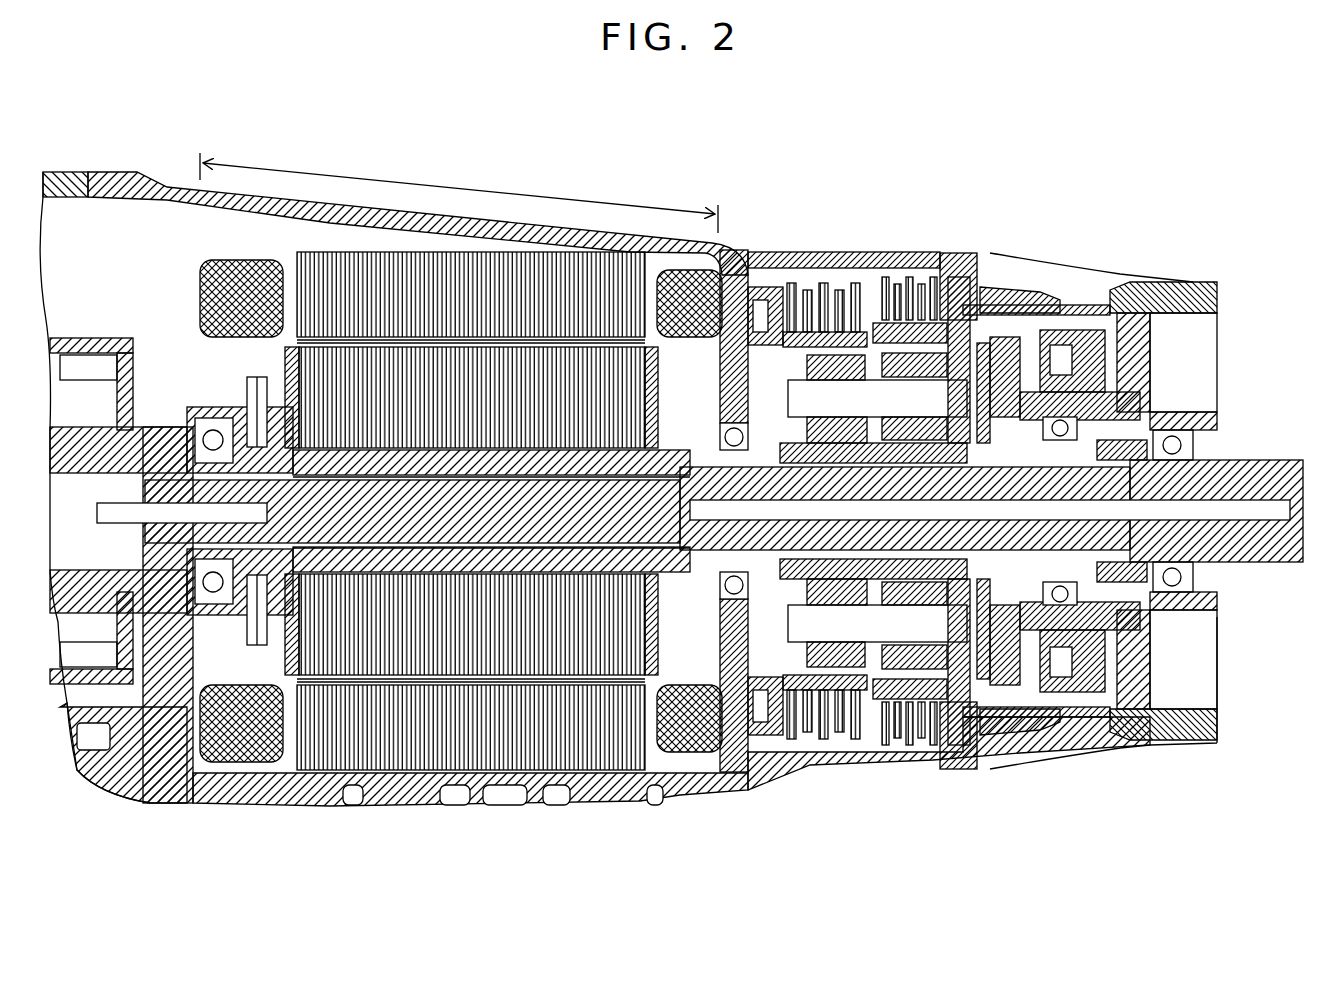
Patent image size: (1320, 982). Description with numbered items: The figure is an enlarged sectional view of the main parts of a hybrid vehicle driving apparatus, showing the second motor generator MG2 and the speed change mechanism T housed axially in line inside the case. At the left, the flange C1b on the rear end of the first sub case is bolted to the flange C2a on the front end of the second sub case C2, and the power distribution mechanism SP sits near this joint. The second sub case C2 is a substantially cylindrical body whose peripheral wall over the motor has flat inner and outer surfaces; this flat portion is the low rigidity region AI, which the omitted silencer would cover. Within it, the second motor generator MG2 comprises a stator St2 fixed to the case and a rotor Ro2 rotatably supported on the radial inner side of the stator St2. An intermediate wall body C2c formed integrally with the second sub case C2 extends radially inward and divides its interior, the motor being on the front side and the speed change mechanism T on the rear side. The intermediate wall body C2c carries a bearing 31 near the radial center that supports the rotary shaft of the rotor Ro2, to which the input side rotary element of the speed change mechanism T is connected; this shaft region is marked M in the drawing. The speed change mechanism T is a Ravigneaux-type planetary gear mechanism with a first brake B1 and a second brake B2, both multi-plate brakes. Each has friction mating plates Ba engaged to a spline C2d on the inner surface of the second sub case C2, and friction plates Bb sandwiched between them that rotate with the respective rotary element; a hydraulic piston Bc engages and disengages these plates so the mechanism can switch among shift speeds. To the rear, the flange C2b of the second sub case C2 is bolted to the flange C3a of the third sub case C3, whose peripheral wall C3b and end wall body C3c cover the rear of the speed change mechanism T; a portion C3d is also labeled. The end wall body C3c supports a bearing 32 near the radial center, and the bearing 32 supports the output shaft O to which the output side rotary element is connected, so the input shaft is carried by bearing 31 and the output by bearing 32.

The flange C1b is at (70, 170).
The flange C2a is at (125, 170).
The second motor generator MG2 is at (454, 450).
The low rigidity region AI is at (459, 193).
The second sub case C2 is at (532, 228).
The power distribution mechanism SP is at (98, 334).
The stator St2 is at (312, 252).
The rotor Ro2 is at (290, 366).
The bearing 31 is at (720, 436).
The shaft M is at (598, 534).
The intermediate wall body C2c is at (712, 630).
The friction mating plates Ba is at (800, 283).
The spline C2d is at (856, 284).
The flange C2b is at (918, 262).
The flange C3a is at (960, 255).
The peripheral wall C3b is at (1043, 290).
The flange C3d is at (1112, 288).
The third sub case C3 is at (1207, 280).
The end wall body C3c is at (1130, 352).
The bearing 32 is at (1195, 446).
The output shaft O is at (1252, 556).
The friction plates Bb is at (820, 335).
The hydraulic piston Bc is at (745, 735).
The first brake B1 is at (830, 735).
The second brake B2 is at (903, 745).
The speed change mechanism T is at (995, 706).